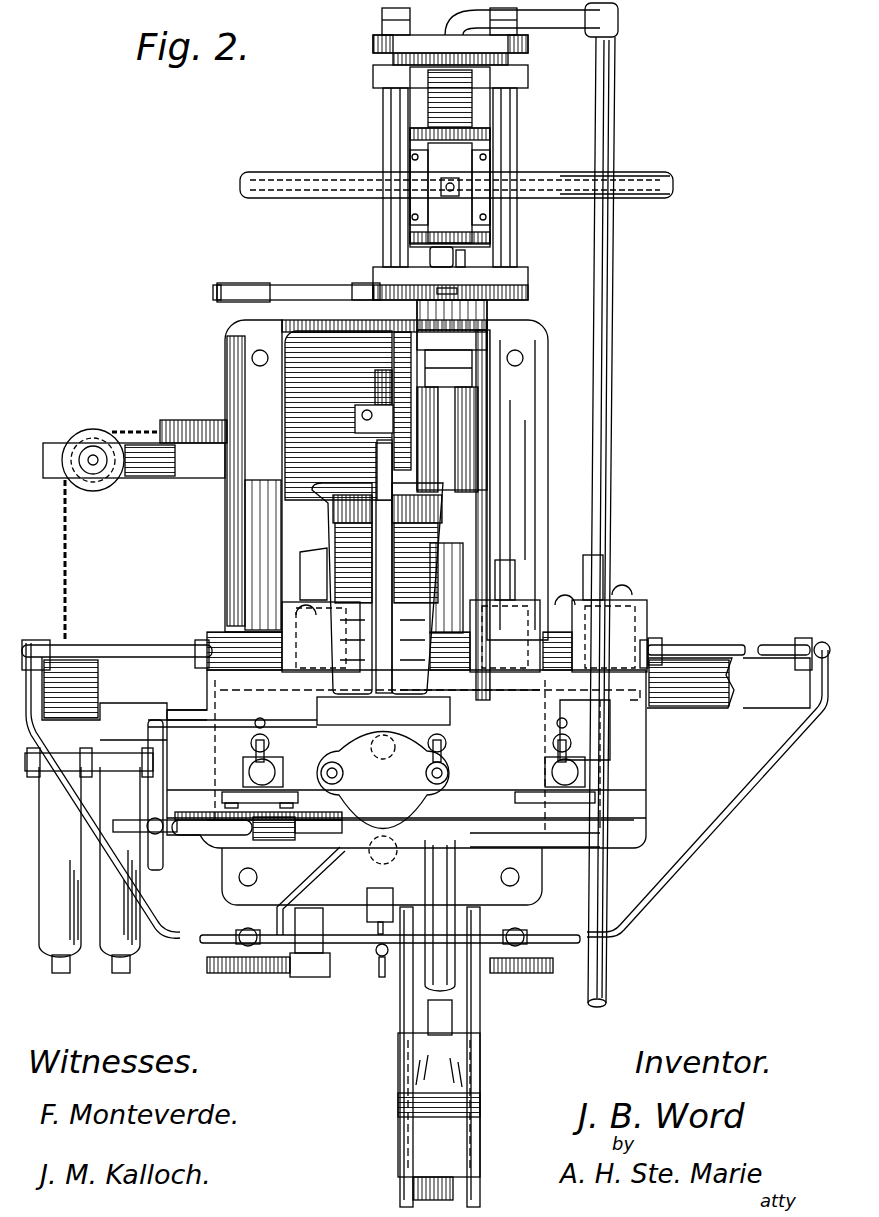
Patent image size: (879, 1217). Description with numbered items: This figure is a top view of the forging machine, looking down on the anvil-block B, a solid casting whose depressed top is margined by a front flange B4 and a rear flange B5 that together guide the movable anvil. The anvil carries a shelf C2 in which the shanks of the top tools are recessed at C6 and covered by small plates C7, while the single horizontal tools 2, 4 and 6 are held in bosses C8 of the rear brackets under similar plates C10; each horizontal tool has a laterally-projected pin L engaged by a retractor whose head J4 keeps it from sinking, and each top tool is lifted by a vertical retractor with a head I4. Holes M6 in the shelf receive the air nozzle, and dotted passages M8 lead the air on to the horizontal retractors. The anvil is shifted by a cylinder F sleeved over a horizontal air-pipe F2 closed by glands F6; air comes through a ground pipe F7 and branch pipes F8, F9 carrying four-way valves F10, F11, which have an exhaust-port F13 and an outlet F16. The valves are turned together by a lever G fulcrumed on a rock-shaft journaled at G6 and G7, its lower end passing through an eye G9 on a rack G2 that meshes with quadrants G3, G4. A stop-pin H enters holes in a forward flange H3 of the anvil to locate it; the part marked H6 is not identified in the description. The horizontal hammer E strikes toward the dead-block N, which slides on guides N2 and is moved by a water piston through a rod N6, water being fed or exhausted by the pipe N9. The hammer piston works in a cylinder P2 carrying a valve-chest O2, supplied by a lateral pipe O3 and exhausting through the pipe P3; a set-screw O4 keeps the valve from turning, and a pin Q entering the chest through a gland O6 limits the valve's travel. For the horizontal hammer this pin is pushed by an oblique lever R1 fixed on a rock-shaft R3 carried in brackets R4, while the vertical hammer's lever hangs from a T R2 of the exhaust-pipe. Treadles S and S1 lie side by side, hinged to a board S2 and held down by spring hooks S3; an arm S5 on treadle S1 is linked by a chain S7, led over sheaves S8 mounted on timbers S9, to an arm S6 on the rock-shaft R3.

The hammer cylinder P2 is at (482, 120).
The water pipe N9 is at (615, 103).
The exhaust-pipe P3 is at (190, 838).
The valve chest O2 is at (450, 186).
The supply-pipe O3 is at (557, 176).
The set-screw O4 is at (446, 198).
The pin Q is at (438, 273).
The stuffing-box and gland O6 is at (466, 264).
The slanting lever R1 is at (458, 293).
The rock-shaft R3 is at (312, 290).
The brackets R4 is at (255, 288).
The arm S6 is at (224, 385).
The horizontal hammer E is at (450, 413).
The laterally-projected pin L is at (370, 575).
The single tool 6 is at (305, 558).
The single tool 4 is at (505, 574).
The single tool 2 is at (608, 565).
The anvil shelf C2 is at (630, 762).
The front flange B4 is at (648, 797).
The anvil forward flange H3 is at (646, 828).
The hole H6 is at (379, 877).
The bosses C8 is at (535, 615).
The small plates C10 is at (296, 618).
The retractor head J4 is at (640, 625).
The air cylinder F is at (200, 640).
The valve outlet F16 is at (200, 668).
The stuffing-boxes and glands F6 is at (662, 645).
The air-pipe F2 is at (735, 645).
The exhaust-port F13 is at (802, 638).
The rear flange B5 is at (716, 665).
The branch pipe F9 is at (752, 780).
The passages M8 is at (635, 690).
The nozzle holes M6 is at (258, 719).
The retractor head I4 is at (251, 742).
The stop-pin H is at (267, 740).
The shank recesses C6 is at (284, 775).
The journal G7 is at (240, 792).
The small plates C7 is at (530, 794).
The pipe T R2 is at (275, 840).
The anvil-block B is at (150, 722).
The arm S5 is at (70, 753).
The treadle S1 is at (60, 862).
The spring hook S3 is at (120, 877).
The board S2 is at (62, 971).
The treadle S is at (150, 893).
The branch pipe F8 is at (160, 905).
The four-way valve F10 is at (246, 930).
The four-way valve F11 is at (522, 930).
The air-supply pipe F7 is at (345, 938).
The journal G6 is at (367, 896).
The lever G is at (378, 956).
The eye G9 is at (381, 978).
The rack G2 is at (285, 978).
The sector gear G3 is at (233, 975).
The sector gear G4 is at (540, 975).
The guides N2 is at (478, 985).
The dead-block N is at (465, 1055).
The rod N6 is at (480, 1020).
The sheaves S8 is at (165, 425).
The timbers S9 is at (195, 478).
The chain S7 is at (68, 578).